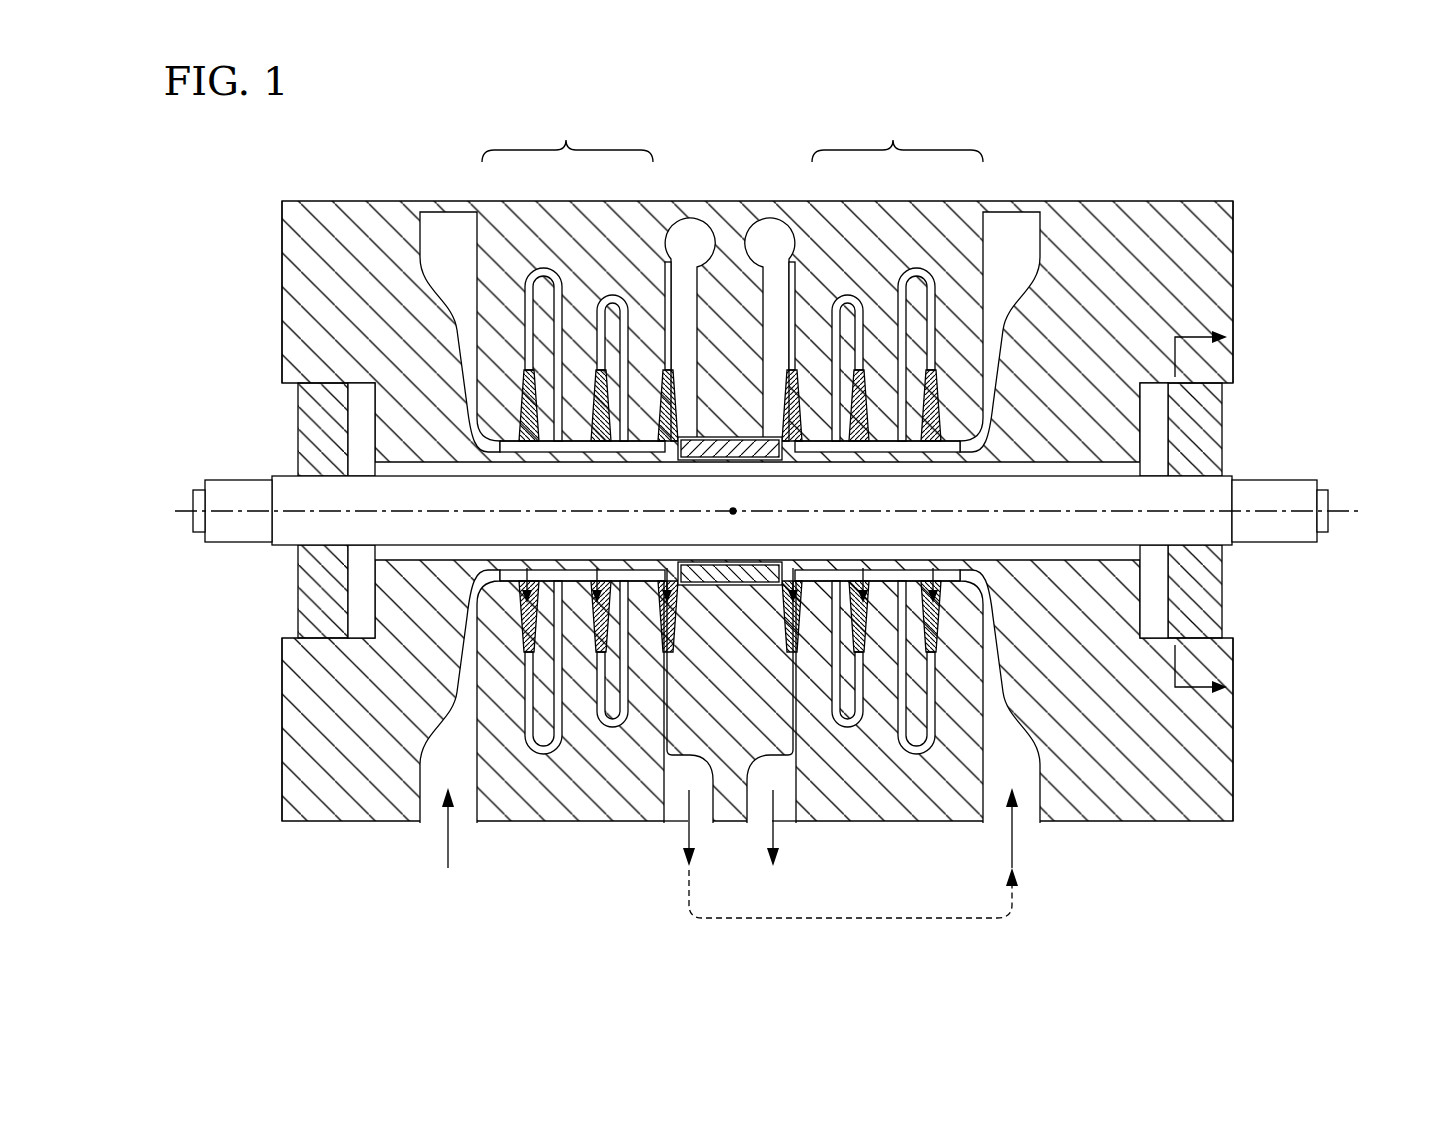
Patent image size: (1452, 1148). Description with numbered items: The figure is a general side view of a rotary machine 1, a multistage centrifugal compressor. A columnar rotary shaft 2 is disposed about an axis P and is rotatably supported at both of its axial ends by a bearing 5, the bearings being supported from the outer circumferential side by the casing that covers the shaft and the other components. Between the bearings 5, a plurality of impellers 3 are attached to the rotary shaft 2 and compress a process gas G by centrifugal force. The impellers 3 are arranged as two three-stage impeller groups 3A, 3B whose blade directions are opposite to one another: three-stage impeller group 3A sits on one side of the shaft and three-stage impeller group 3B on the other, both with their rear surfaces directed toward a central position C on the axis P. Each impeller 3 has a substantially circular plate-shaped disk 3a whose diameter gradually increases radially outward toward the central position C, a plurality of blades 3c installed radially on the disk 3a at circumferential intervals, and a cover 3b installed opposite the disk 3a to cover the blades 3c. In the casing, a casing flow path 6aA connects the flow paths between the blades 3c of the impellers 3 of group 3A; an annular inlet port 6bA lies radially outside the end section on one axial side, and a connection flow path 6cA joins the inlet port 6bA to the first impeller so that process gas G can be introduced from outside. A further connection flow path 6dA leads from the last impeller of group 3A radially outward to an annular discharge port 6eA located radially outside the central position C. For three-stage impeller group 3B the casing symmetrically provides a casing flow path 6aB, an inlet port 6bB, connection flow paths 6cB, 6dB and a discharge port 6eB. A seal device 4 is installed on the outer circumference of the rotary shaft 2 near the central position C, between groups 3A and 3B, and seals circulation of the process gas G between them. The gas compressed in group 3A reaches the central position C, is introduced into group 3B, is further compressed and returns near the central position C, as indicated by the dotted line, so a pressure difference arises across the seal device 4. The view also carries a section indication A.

The rotary machine 1 is at (1333, 347).
The rotary shaft 2 is at (1277, 492).
The impeller 3 is at (533, 362).
The three-stage impeller group 3A is at (573, 345).
The three-stage impeller group 3B is at (889, 345).
The disk 3a is at (533, 650).
The cover 3b is at (602, 650).
The blades 3c is at (668, 650).
The seal device 4 is at (733, 437).
The bearing 5 is at (318, 596).
The casing flow path 6aA is at (530, 308).
The casing flow path 6aB is at (925, 308).
The inlet port 6bA is at (450, 233).
The inlet port 6bB is at (1010, 233).
The connection flow path 6cA is at (463, 345).
The connection flow path 6cB is at (1000, 355).
The connection flow path 6dA is at (663, 290).
The connection flow path 6dB is at (796, 290).
The discharge port 6eA is at (690, 238).
The discharge port 6eB is at (770, 238).
The section line A is at (1201, 510).
The central position C is at (730, 508).
The process gas G is at (597, 588).
The axis P is at (1340, 512).